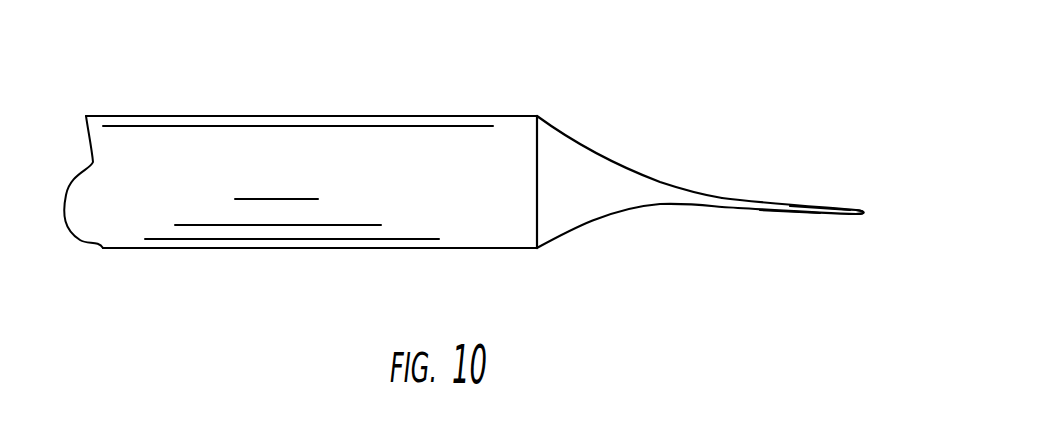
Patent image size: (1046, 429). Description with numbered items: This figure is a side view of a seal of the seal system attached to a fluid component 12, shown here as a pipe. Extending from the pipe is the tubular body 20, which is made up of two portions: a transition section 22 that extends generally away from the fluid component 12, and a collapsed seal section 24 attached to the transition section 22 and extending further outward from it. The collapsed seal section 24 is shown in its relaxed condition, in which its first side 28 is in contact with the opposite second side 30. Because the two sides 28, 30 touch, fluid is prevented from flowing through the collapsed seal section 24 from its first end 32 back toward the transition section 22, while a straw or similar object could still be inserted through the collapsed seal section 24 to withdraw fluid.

The fluid component 12 is at (323, 116).
The tubular body 20 is at (863, 230).
The transition section 22 is at (538, 108).
The collapsed seal section 24 is at (722, 185).
The first side 28 is at (785, 214).
The second side 30 is at (797, 203).
The first end 32 is at (865, 213).